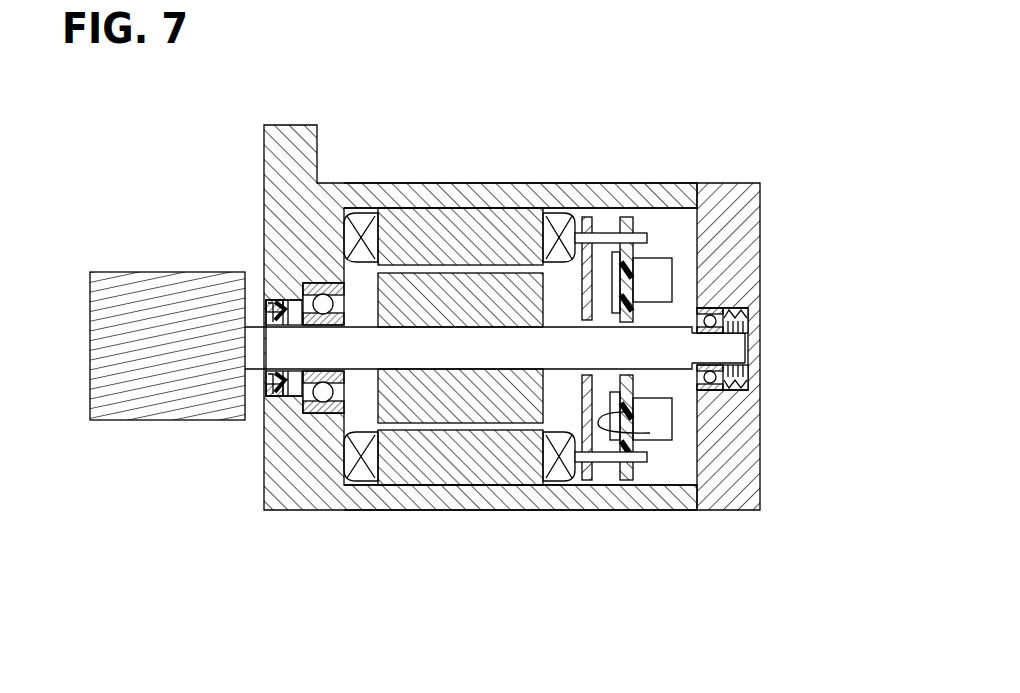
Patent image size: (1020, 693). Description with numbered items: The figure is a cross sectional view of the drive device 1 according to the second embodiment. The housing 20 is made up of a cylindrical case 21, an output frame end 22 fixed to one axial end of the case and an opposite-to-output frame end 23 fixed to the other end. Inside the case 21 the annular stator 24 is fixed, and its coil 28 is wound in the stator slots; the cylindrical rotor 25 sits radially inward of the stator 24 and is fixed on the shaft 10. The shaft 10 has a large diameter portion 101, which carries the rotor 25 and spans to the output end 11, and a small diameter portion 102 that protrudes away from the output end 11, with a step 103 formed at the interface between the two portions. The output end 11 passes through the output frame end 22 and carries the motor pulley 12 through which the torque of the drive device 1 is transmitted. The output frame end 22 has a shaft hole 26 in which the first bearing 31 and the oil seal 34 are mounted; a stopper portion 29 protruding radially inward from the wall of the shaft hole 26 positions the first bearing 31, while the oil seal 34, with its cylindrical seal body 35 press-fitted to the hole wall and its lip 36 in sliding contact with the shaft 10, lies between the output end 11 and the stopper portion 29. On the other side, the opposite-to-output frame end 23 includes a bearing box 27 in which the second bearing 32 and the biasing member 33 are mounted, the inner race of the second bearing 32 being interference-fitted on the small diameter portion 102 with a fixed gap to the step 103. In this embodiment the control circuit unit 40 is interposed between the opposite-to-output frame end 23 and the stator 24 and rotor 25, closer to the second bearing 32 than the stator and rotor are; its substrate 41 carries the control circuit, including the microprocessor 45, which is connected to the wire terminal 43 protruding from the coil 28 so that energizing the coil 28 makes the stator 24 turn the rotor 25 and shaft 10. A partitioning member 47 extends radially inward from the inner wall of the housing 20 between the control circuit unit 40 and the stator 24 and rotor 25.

The drive device 1 is at (352, 72).
The shaft 10 is at (545, 325).
The large diameter portion 101 is at (410, 345).
The small diameter portion 102 is at (712, 350).
The step 103 is at (745, 333).
The output end 11 is at (253, 360).
The motor pulley 12 is at (105, 340).
The housing 20 is at (512, 388).
The case 21 is at (530, 510).
The output frame end 22 is at (320, 463).
The opposite-to-output frame end 23 is at (717, 394).
The stator 24 is at (505, 255).
The rotor 25 is at (458, 292).
The shaft hole 26 is at (297, 314).
The bearing box 27 is at (692, 305).
The coil 28 is at (562, 236).
The stopper portion 29 is at (295, 400).
The first bearing 31 is at (325, 295).
The second bearing 32 is at (733, 320).
The biasing member 33 is at (742, 388).
The oil seal 34 is at (244, 378).
The seal body 35 is at (272, 306).
The lip 36 is at (266, 318).
The control circuit unit 40 is at (640, 294).
The substrate 41 is at (628, 235).
The wire terminal 43 is at (615, 252).
The microprocessor 45 is at (650, 433).
The partitioning member 47 is at (584, 217).